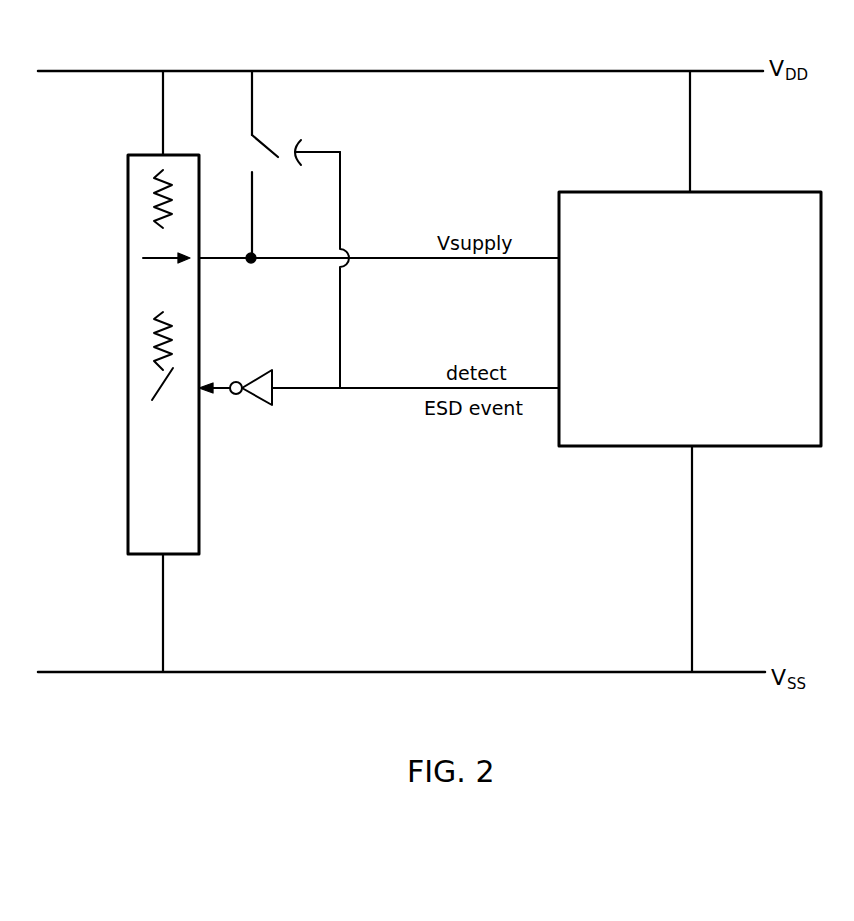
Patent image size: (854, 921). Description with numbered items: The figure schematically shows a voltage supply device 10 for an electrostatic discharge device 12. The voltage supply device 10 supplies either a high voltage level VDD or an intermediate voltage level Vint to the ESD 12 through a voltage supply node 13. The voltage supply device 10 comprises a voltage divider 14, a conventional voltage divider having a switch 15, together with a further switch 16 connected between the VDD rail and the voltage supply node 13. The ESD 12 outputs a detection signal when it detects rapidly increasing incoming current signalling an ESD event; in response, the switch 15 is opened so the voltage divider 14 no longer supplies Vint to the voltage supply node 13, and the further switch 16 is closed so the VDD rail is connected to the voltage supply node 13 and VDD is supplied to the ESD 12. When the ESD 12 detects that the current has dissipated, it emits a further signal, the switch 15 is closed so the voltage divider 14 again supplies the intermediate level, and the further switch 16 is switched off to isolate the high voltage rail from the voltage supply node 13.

The voltage supply device 10 is at (297, 52).
The electrostatic discharge device 12 is at (620, 190).
The voltage supply node 13 is at (253, 251).
The voltage divider 14 is at (200, 525).
The switch 15 is at (158, 382).
The further switch 16 is at (277, 133).